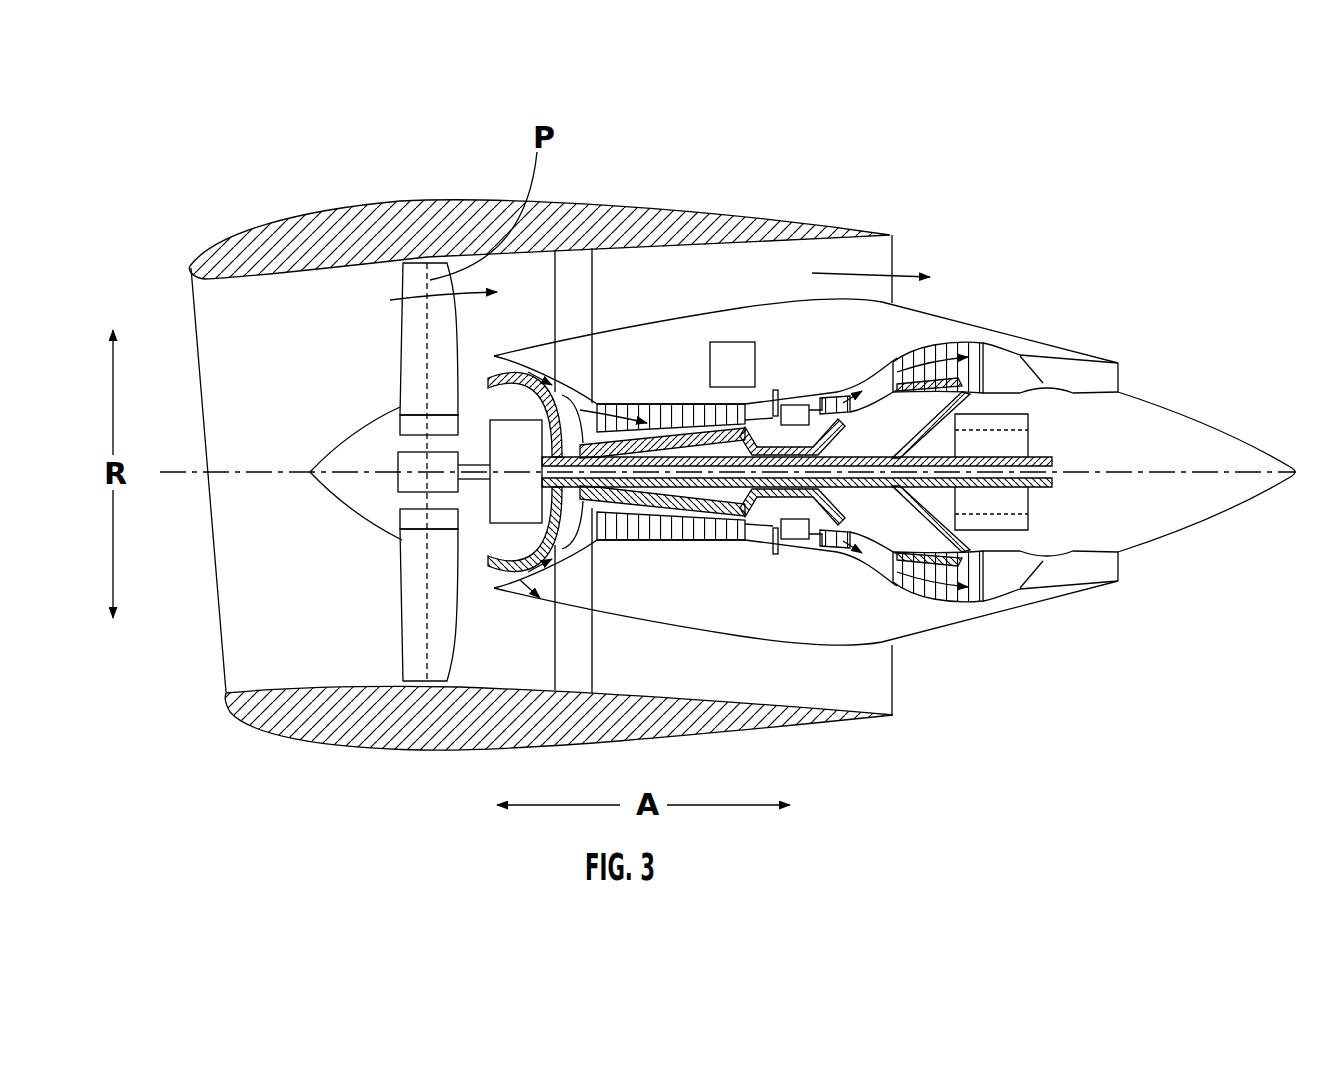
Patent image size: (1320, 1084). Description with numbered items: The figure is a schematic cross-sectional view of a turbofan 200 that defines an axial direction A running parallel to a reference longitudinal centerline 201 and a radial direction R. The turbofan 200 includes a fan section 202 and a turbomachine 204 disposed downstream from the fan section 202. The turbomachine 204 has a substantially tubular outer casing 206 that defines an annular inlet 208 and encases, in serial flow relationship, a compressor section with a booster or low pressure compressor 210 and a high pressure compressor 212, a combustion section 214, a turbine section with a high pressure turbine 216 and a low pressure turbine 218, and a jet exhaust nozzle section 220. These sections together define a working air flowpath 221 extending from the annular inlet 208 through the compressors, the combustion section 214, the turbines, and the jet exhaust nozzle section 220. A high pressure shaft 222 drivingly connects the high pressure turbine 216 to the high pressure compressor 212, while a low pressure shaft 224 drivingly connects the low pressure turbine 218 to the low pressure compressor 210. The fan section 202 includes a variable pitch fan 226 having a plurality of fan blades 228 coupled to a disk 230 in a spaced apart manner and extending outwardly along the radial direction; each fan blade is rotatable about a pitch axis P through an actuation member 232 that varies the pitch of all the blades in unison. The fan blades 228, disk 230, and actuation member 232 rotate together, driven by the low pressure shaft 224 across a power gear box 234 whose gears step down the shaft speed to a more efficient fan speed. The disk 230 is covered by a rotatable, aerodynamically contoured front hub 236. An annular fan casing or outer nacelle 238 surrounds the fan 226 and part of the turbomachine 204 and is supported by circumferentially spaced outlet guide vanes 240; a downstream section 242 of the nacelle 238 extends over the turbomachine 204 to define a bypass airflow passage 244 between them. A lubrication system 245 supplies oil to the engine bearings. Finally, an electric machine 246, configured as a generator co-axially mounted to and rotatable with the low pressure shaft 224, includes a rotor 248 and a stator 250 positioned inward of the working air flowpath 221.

The turbofan 200 is at (1036, 217).
The longitudinal centerline 201 is at (1092, 462).
The fan section 202 is at (358, 288).
The turbomachine 204 is at (712, 292).
The outer casing 206 is at (753, 638).
The annular inlet 208 is at (500, 577).
The low pressure compressor 210 is at (532, 585).
The high pressure compressor 212 is at (620, 522).
The combustion section 214 is at (793, 533).
The high pressure turbine 216 is at (898, 525).
The low pressure turbine 218 is at (976, 600).
The jet exhaust nozzle section 220 is at (1036, 580).
The working air flowpath 221 is at (563, 553).
The high pressure shaft 222 is at (793, 425).
The low pressure shaft 224 is at (1045, 457).
The variable pitch fan 226 is at (367, 524).
The fan blades 228 is at (397, 623).
The disk 230 is at (417, 425).
The actuation member 232 is at (397, 453).
The power gear box 234 is at (582, 410).
The front hub 236 is at (323, 490).
The outer nacelle 238 is at (448, 744).
The outlet guide vanes 240 is at (592, 283).
The downstream section 242 is at (823, 221).
The bypass airflow passage 244 is at (781, 292).
The lubrication system 245 is at (755, 342).
The electric machine 246 is at (1036, 406).
The rotor 248 is at (1018, 495).
The stator 250 is at (1020, 522).